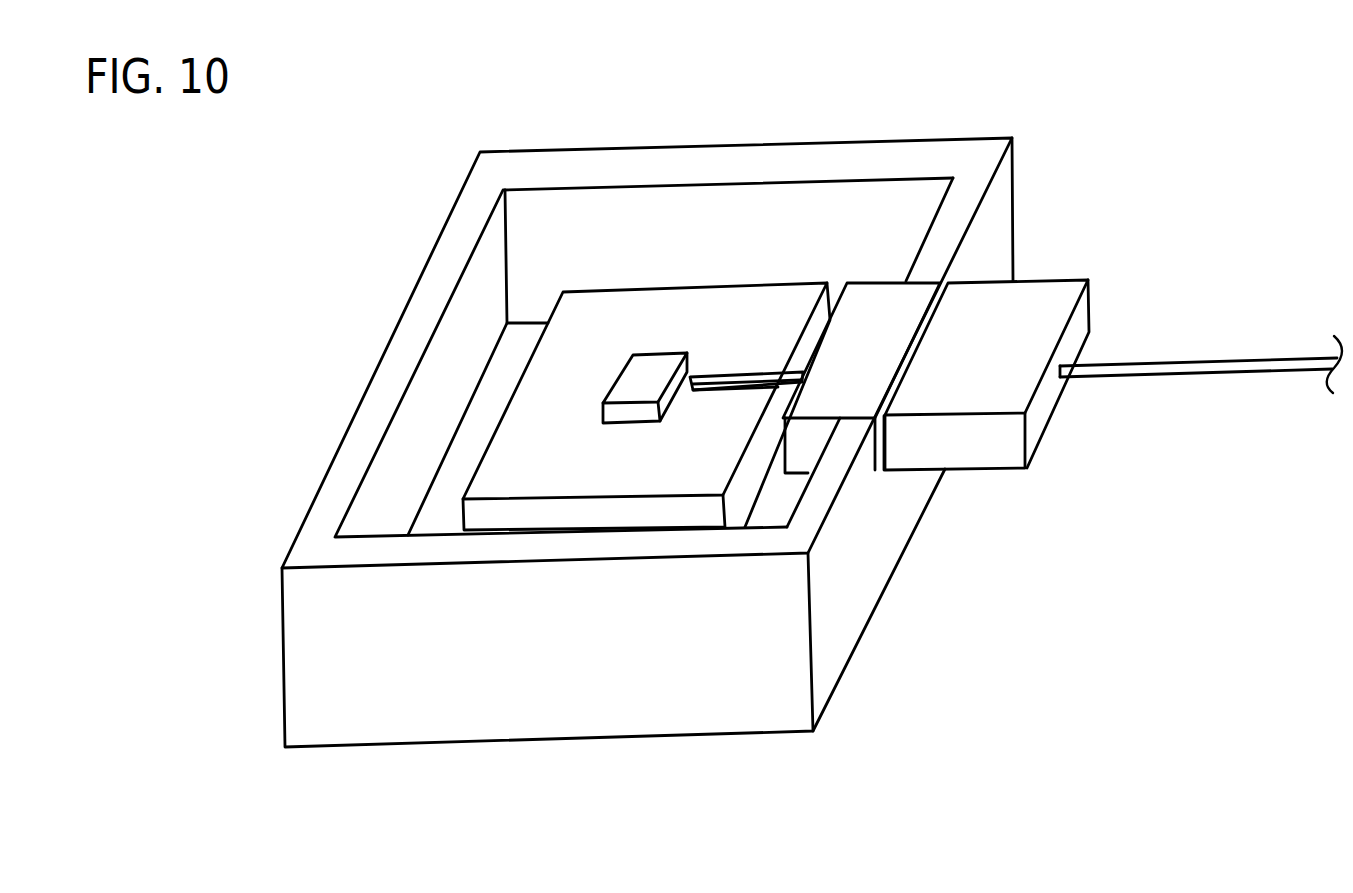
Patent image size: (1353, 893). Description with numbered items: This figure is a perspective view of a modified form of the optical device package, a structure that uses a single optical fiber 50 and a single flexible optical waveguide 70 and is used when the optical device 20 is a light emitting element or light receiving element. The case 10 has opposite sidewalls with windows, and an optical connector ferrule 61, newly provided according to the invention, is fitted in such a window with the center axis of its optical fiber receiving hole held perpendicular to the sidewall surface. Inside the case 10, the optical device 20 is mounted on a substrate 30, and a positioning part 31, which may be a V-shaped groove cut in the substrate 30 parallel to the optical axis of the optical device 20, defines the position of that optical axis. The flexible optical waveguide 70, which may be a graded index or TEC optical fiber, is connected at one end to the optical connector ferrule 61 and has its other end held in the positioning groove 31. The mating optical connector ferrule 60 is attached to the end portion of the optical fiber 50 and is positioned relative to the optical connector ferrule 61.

The case 10 is at (708, 153).
The optical device 20 is at (647, 397).
The substrate 30 is at (570, 347).
The positioning part 31 is at (703, 392).
The optical fiber 50 is at (1159, 378).
The optical connector ferrule 60 is at (1005, 459).
The optical connector ferrule 61 is at (872, 400).
The flexible optical waveguide 70 is at (747, 375).